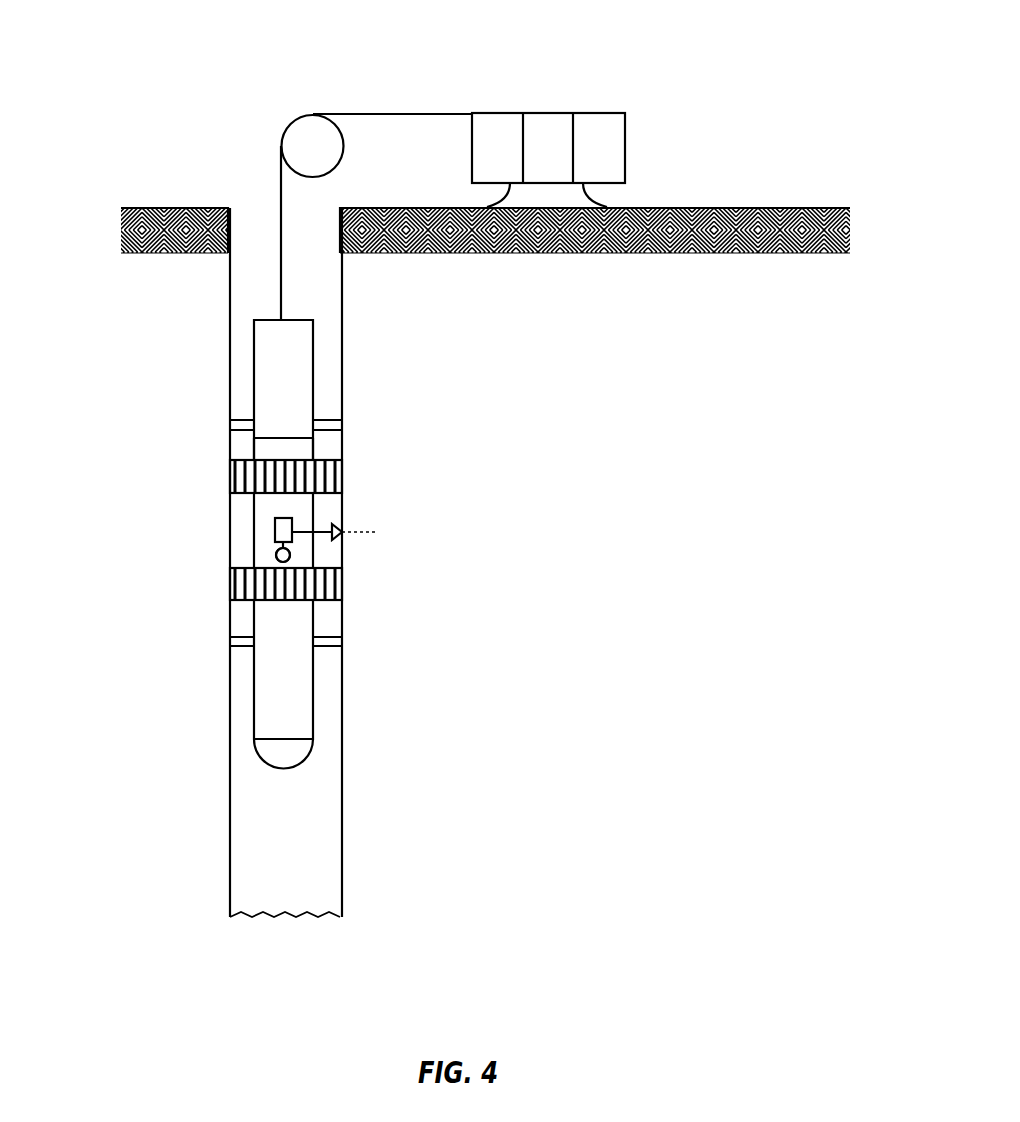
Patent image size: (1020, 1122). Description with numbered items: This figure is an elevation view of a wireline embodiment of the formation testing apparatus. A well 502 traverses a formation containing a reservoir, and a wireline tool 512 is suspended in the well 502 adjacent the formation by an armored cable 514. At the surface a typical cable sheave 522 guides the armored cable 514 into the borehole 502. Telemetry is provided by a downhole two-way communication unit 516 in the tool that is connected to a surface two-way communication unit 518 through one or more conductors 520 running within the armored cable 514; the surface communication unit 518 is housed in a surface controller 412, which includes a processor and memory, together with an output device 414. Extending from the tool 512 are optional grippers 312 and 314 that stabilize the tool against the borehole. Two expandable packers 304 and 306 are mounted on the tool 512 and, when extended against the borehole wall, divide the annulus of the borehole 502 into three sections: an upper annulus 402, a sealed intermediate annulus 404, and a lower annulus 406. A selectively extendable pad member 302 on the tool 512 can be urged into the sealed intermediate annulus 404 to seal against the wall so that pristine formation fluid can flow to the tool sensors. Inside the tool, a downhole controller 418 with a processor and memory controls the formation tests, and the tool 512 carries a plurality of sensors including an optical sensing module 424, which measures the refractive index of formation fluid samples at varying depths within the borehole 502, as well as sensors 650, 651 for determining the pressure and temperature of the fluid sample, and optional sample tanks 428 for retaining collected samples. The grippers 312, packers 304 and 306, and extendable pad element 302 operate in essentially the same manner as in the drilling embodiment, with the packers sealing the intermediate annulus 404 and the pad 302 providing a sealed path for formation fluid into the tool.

The well 502 is at (245, 210).
The cable sheave 522 is at (313, 146).
The conductors 520 is at (382, 112).
The armored cable 514 is at (282, 260).
The surface two-way communication unit 518 is at (497, 113).
The surface controller 412 is at (547, 113).
The output device 414 is at (600, 113).
The upper annulus 402 is at (240, 357).
The wireline tool 512 is at (252, 395).
The downhole two-way communication unit 516 is at (278, 345).
The sample tanks 428 is at (278, 382).
The grippers 312 is at (327, 417).
The downhole controller 418 is at (292, 452).
The packer 304 is at (228, 477).
The optical sensing module 424 is at (273, 522).
The sensor 650 is at (275, 555).
The sensor 651 is at (283, 555).
The selectively extendable pad member 302 is at (340, 527).
The sealed intermediate annulus 404 is at (325, 555).
The packer 306 is at (228, 587).
The lower annulus 406 is at (325, 623).
The gripper 314 is at (325, 645).